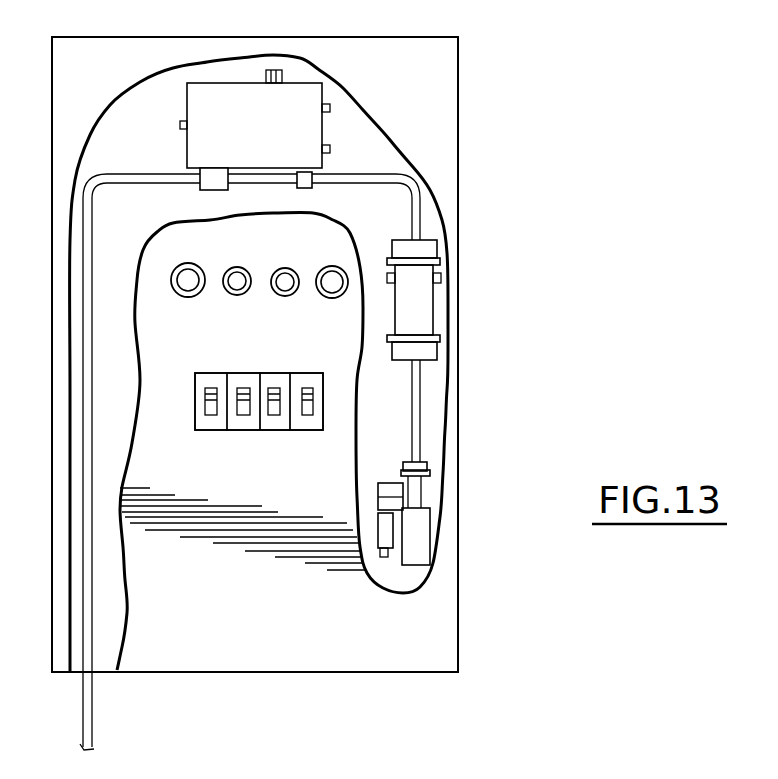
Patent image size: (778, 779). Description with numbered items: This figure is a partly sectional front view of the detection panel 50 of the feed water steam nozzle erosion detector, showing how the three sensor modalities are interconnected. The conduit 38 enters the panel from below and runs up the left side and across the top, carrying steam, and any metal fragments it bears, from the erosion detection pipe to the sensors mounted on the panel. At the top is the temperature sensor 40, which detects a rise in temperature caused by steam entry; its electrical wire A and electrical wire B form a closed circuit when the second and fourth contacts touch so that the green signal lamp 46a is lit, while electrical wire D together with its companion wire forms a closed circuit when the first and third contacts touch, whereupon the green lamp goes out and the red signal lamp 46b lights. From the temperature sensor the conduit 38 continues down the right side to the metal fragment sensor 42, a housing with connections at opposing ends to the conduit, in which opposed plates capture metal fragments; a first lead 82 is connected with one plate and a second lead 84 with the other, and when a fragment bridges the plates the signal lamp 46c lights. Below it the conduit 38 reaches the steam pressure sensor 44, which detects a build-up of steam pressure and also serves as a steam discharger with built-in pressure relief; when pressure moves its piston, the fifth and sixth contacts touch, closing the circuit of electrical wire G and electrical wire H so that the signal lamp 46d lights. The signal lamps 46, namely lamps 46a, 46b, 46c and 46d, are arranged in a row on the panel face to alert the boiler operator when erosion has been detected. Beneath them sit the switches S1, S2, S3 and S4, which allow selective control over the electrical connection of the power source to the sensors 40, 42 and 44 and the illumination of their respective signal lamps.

The temperature sensor 40 is at (320, 70).
The electrical wire A is at (330, 107).
The electrical wire B is at (330, 150).
The electrical wire D is at (181, 125).
The detection panel 50 is at (460, 126).
The conduit 38 is at (420, 212).
The metal fragment sensor 42 is at (443, 313).
The first lead 82 is at (388, 278).
The second lead 84 is at (445, 272).
The steam pressure sensor 44 is at (443, 518).
The electrical wire G is at (380, 512).
The electrical wire H is at (383, 558).
The signal lamps 46 is at (226, 280).
The green signal lamp 46a is at (173, 272).
The red signal lamp 46b is at (327, 295).
The signal lamp 46c is at (221, 270).
The signal lamp 46d is at (278, 268).
The switch S1 is at (212, 432).
The switch S2 is at (245, 432).
The switch S3 is at (278, 432).
The switch S4 is at (308, 432).